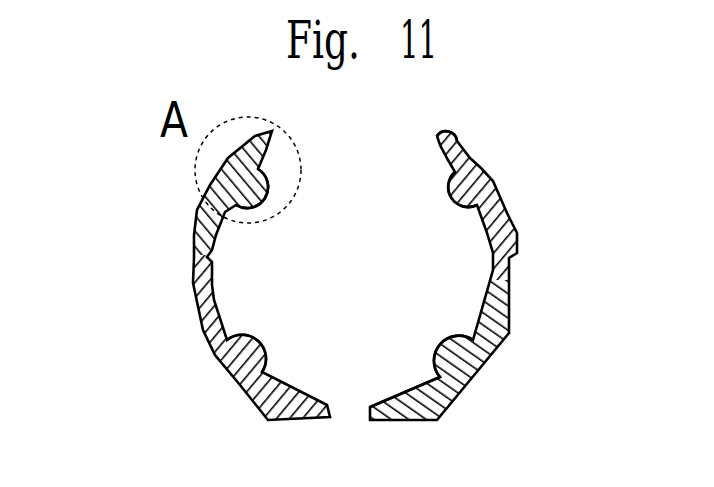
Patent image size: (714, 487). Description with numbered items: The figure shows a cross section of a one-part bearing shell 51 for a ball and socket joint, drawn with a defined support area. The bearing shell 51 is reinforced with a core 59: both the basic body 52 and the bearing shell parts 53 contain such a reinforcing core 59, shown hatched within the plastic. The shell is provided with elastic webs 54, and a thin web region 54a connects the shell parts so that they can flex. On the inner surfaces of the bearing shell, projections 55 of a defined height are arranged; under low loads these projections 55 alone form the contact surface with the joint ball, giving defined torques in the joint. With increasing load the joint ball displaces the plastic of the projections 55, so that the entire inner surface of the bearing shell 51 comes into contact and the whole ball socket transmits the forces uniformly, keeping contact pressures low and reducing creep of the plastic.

The bearing shell 51 is at (488, 150).
The basic body 52 is at (463, 390).
The bearing shell parts 53 is at (200, 207).
The elastic webs 54 is at (507, 270).
The thin neck portion of clip arm 54a is at (197, 262).
The projections 55 is at (497, 180).
The reinforcing core 59 is at (210, 357).